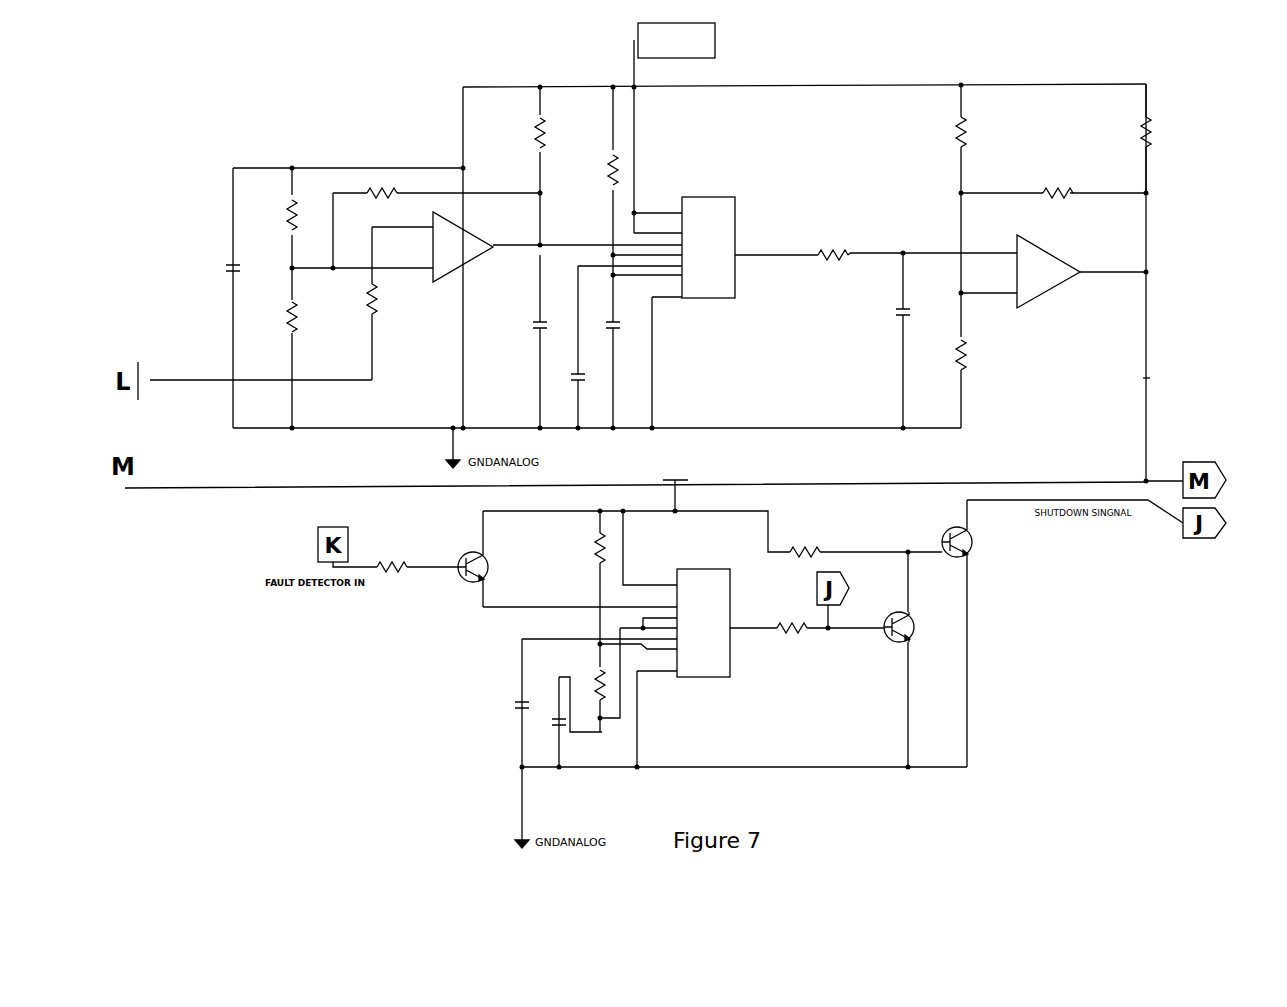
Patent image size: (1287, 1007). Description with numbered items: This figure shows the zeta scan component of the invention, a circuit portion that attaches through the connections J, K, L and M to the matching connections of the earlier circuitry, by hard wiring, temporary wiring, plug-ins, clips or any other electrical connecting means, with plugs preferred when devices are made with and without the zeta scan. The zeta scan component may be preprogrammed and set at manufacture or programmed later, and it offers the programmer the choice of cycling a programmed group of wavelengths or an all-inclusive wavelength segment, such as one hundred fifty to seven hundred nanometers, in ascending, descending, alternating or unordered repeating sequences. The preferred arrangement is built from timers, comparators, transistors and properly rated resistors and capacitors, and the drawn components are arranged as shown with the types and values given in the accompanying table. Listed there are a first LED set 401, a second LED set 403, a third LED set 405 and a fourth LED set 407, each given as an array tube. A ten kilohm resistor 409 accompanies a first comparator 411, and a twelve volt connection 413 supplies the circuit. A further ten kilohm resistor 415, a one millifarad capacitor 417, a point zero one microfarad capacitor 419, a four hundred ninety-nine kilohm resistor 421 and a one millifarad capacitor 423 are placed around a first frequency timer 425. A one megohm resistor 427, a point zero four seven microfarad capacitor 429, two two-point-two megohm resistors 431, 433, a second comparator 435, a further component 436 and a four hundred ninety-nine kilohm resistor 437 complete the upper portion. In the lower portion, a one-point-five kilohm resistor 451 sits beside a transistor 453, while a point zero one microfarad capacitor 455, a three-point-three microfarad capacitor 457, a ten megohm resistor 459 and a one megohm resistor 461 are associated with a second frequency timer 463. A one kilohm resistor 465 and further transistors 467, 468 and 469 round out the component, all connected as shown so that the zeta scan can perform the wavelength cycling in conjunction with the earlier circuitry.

The LED Set 1 401 is at (225, 245).
The LED Set 2 403 is at (300, 195).
The LED Set 3 405 is at (265, 315).
The LED Set 4 407 is at (407, 188).
The resistor 409 is at (380, 320).
The comparator 411 is at (480, 215).
The 12 volt connection 413 is at (640, 80).
The resistor 415 is at (528, 112).
The capacitor 417 is at (533, 345).
The capacitor 419 is at (585, 398).
The resistor 421 is at (607, 140).
The capacitor 423 is at (620, 345).
The frequency timer 425 is at (748, 213).
The resistor 427 is at (860, 242).
The capacitor 429 is at (893, 337).
The resistor 431 is at (985, 135).
The resistor 433 is at (970, 383).
The comparator 435 is at (1040, 237).
The resistor R40 436 is at (1081, 185).
The resistor 437 is at (1175, 140).
The resistor 451 is at (412, 577).
The transistor 453 is at (462, 587).
The capacitor 455 is at (515, 728).
The capacitor 457 is at (563, 738).
The resistor 459 is at (590, 568).
The resistor 461 is at (592, 667).
The frequency timer 463 is at (703, 697).
The resistor 465 is at (812, 635).
The transistor 467 is at (830, 545).
The transistor Q6 468 is at (912, 650).
The transistor 469 is at (973, 573).